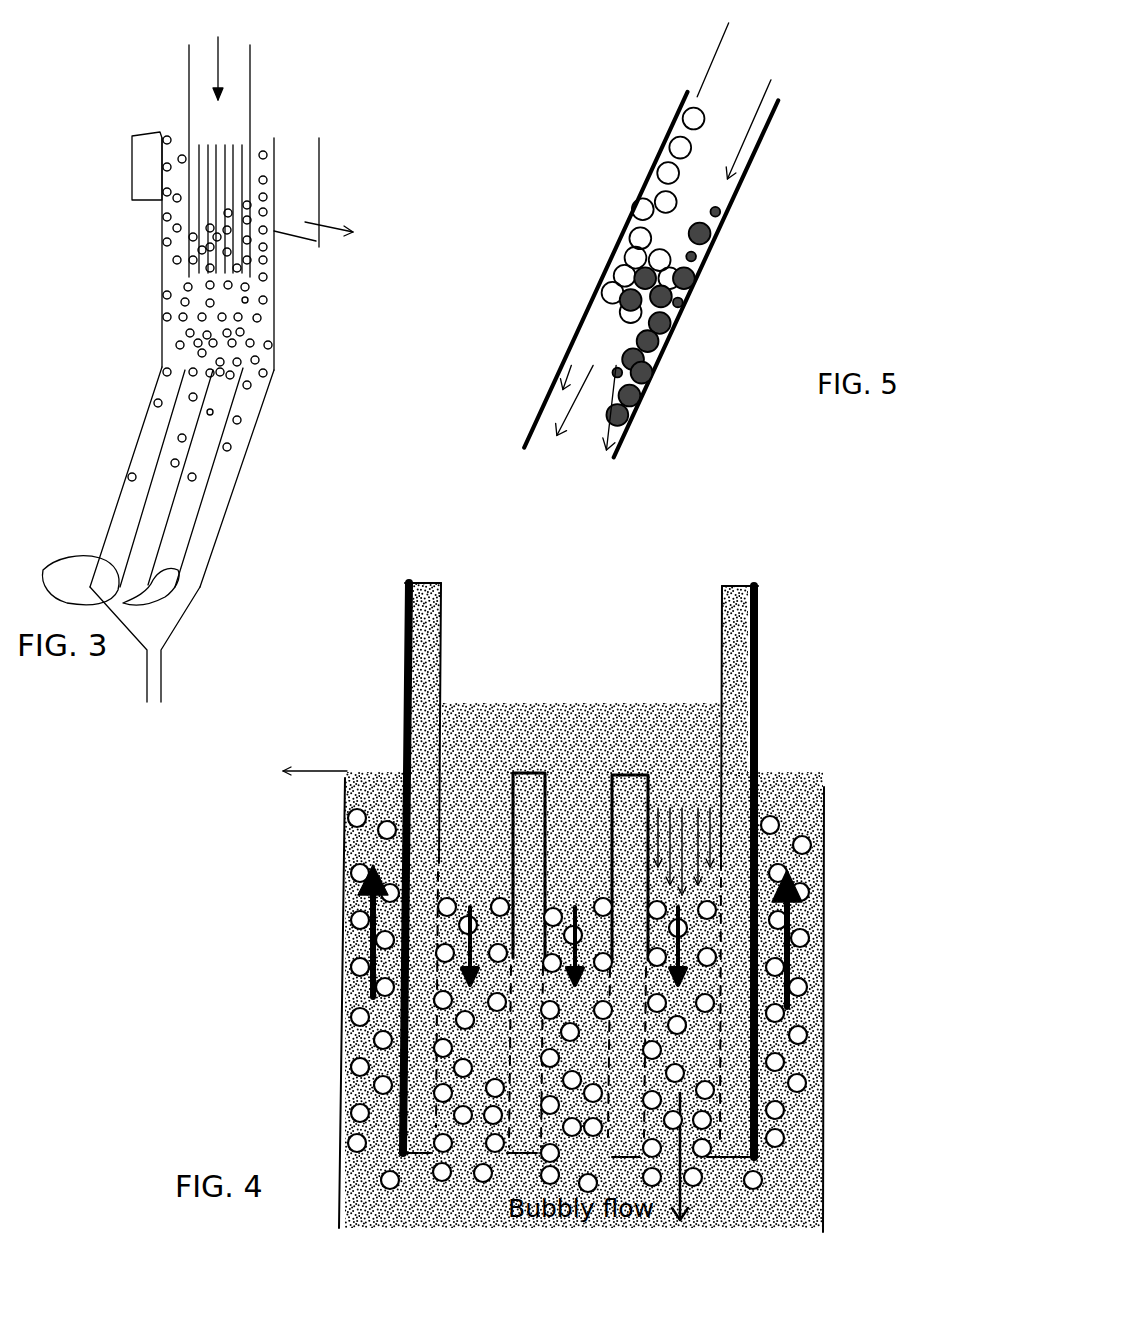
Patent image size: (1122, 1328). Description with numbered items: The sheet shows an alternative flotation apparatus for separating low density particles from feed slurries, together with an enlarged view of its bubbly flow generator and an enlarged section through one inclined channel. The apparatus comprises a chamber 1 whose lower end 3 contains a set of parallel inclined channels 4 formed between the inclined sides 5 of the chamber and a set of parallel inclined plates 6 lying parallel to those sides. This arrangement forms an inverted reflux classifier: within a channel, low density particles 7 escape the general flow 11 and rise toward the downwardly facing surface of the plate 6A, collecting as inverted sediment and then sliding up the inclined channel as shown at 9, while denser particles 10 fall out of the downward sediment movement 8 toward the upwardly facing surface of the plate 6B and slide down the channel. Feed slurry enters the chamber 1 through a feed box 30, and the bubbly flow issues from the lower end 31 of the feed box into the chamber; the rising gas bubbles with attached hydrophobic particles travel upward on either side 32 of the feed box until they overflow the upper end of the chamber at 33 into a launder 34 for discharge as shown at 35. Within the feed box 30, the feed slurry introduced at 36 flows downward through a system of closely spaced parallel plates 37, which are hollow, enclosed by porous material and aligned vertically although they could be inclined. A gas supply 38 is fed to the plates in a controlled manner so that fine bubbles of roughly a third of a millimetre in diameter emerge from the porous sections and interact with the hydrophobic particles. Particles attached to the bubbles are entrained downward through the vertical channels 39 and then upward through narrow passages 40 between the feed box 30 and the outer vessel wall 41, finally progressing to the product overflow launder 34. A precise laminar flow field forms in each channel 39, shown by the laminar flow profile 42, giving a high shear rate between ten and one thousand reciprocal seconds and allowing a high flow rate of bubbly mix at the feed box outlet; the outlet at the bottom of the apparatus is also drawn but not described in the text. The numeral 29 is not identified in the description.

In FIG. 3, the chamber 1 is at (162, 297).
In FIG. 3, the lower end 3 is at (145, 418).
In FIG. 3, the parallel inclined channels 4 is at (133, 503).
In FIG. 3, the inclined sides 5 is at (117, 512).
In FIG. 3, the parallel inclined plates 6 is at (96, 580).
In FIG. 5, the plate 6A is at (623, 138).
In FIG. 5, the plate 6B is at (710, 133).
In FIG. 5, the low density particles 7 is at (637, 110).
In FIG. 5, the downward sediment movement 8 is at (727, 72).
In FIG. 5, the sliding up the inclined channels 9 is at (677, 45).
In FIG. 5, the denser particles 10 is at (643, 268).
In FIG. 5, the general flow 11 is at (568, 377).
In FIG. 3, the outlet 29 is at (163, 670).
In FIG. 3, the feed box 30 is at (250, 80).
In FIG. 4, the feed box 30 is at (405, 657).
In FIG. 3, the lower end 31 is at (260, 278).
In FIG. 4, the lower end 31 is at (717, 1163).
In FIG. 3, the either side 32 is at (162, 232).
In FIG. 3, the upper end overflow 33 is at (132, 135).
In FIG. 4, the upper end overflow 33 is at (345, 780).
In FIG. 3, the launder 34 is at (132, 158).
In FIG. 3, the discharge 35 is at (328, 233).
In FIG. 4, the feed slurry introduction 36 is at (683, 700).
In FIG. 4, the closely spaced parallel plates 37 is at (418, 843).
In FIG. 4, the gas supply 38 is at (632, 772).
In FIG. 4, the vertical channels 39 is at (590, 1113).
In FIG. 4, the narrow passages 40 is at (343, 922).
In FIG. 4, the outer vessel wall 41 is at (360, 1040).
In FIG. 4, the laminar flow profile 42 is at (695, 837).